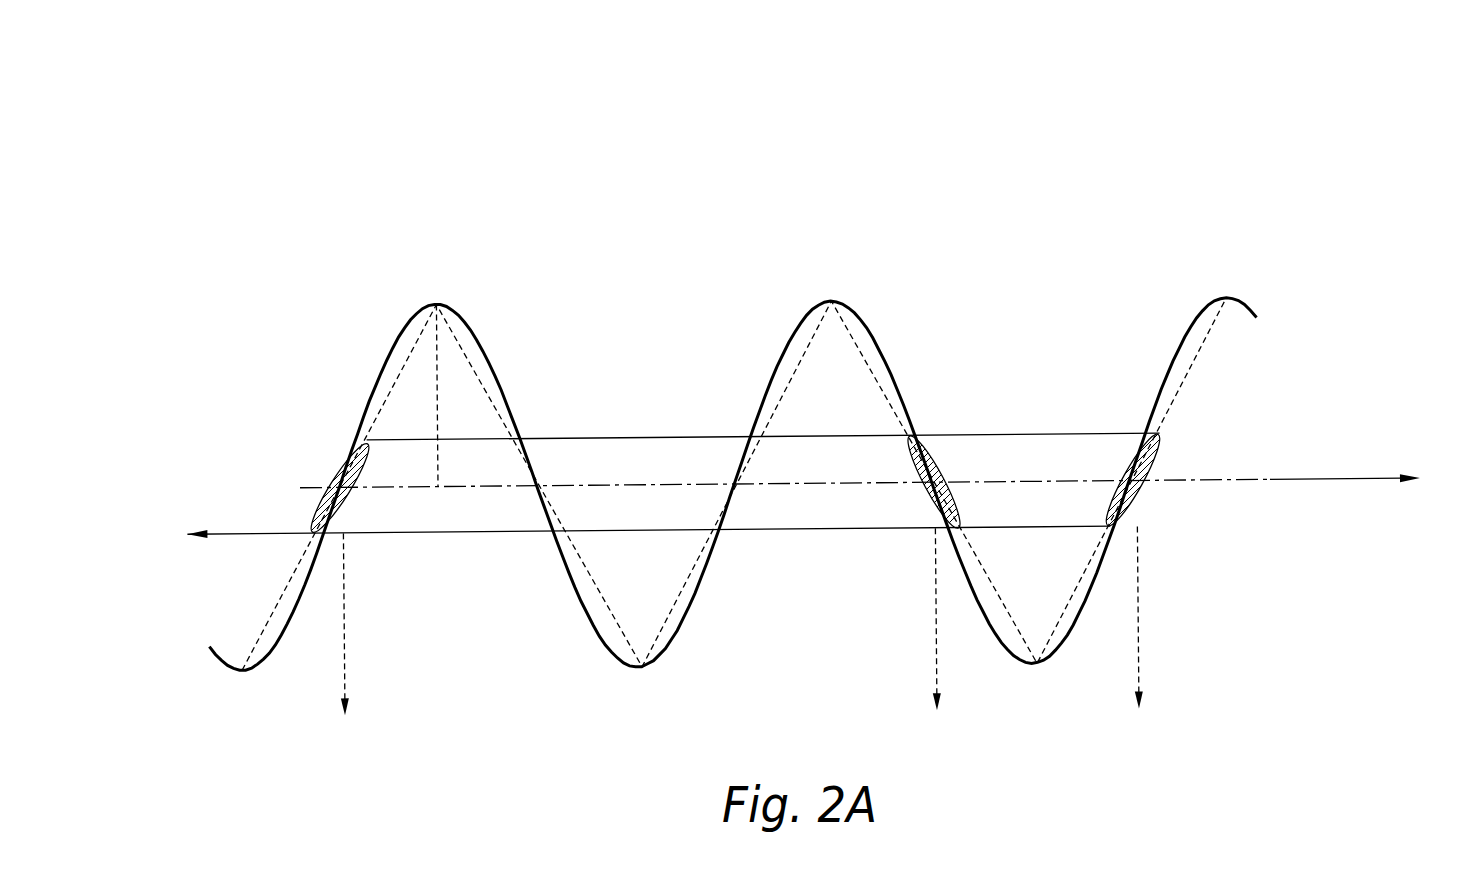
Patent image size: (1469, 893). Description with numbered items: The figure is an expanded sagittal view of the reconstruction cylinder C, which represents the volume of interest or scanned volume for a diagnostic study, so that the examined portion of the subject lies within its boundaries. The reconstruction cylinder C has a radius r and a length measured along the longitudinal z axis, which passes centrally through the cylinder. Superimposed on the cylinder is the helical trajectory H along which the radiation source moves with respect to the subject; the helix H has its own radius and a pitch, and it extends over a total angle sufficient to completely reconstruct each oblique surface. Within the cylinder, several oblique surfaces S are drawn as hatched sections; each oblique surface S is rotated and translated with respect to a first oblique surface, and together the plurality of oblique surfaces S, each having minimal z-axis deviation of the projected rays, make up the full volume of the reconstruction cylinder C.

The helical trajectory H is at (1272, 403).
The reconstruction cylinder C is at (807, 520).
The oblique surface S is at (342, 470).
The z-axis z is at (874, 478).
The radius r is at (740, 638).